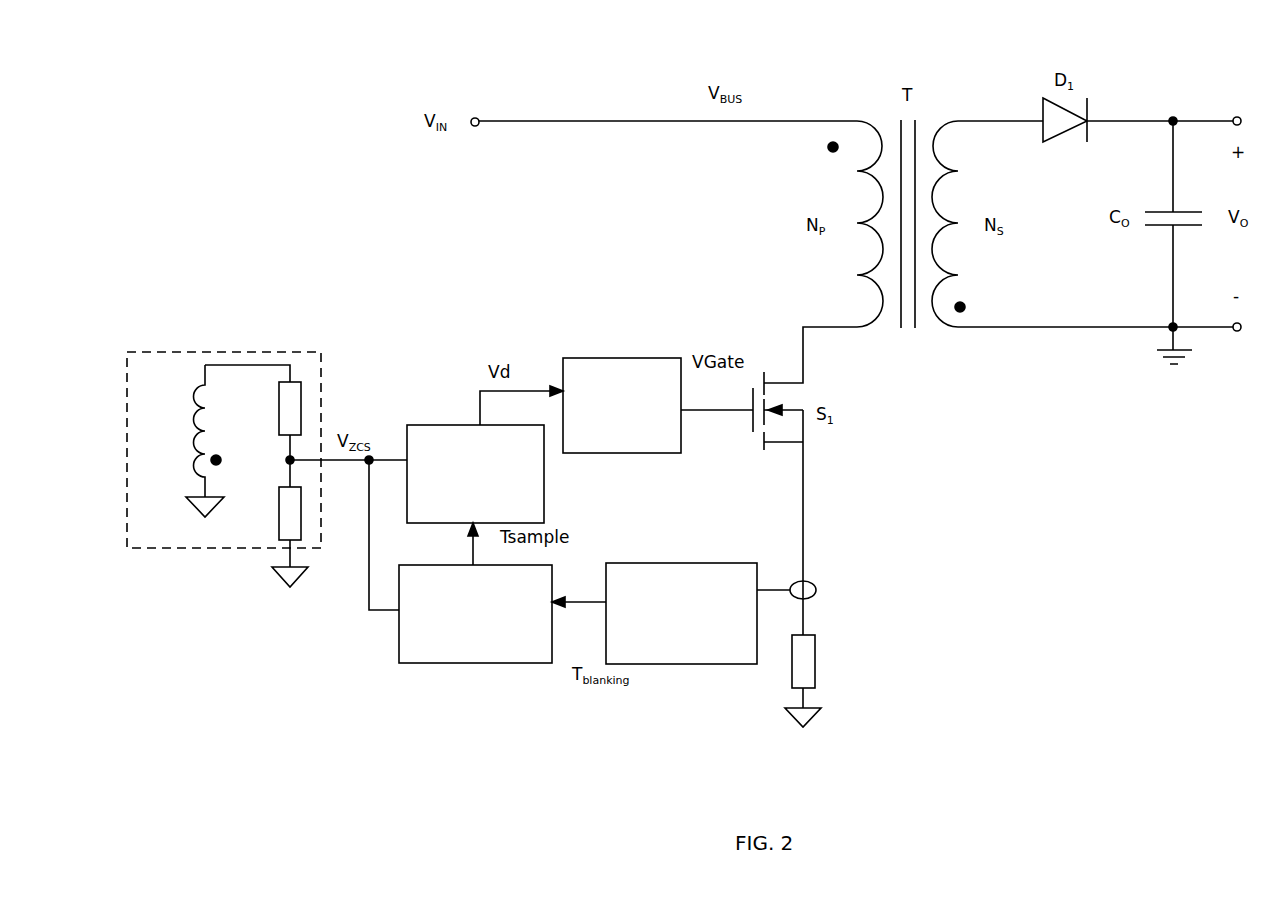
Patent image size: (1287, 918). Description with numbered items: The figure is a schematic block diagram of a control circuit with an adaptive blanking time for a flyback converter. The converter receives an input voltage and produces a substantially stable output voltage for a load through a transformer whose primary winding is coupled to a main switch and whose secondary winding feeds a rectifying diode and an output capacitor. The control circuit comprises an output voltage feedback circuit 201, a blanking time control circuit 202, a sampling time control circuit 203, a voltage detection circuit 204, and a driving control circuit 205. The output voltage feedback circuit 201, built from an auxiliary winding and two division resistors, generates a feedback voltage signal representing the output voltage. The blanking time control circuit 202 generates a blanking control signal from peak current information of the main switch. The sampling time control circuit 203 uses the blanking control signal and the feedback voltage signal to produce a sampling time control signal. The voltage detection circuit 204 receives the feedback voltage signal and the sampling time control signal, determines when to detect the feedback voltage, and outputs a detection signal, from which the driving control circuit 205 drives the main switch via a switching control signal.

The output voltage feedback circuit 201 is at (222, 352).
The blanking time control circuit 202 is at (665, 563).
The sampling time control circuit 203 is at (455, 565).
The voltage detection circuit 204 is at (457, 425).
The driving control circuit 205 is at (607, 358).